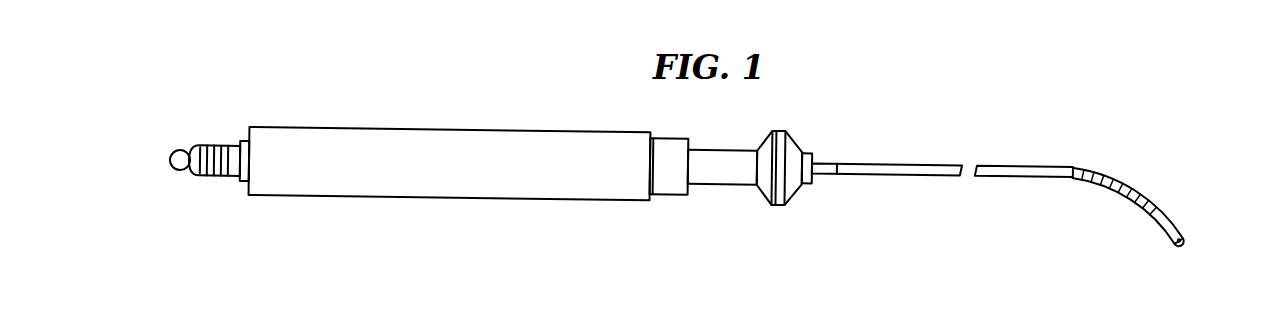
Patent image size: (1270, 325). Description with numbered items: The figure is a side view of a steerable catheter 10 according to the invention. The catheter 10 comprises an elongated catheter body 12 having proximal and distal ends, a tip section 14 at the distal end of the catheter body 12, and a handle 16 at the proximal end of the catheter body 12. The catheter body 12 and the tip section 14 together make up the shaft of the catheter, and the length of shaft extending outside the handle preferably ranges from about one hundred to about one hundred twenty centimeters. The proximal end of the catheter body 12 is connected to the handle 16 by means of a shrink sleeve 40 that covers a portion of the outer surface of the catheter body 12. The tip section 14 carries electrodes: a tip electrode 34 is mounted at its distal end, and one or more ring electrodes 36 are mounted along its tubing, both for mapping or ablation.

The catheter 10 is at (962, 130).
The catheter body 12 is at (845, 160).
The tip section 14 is at (1102, 163).
The handle 16 is at (375, 128).
The tip electrode 34 is at (1181, 246).
The ring electrodes 36 is at (1147, 194).
The shrink sleeve 40 is at (812, 180).